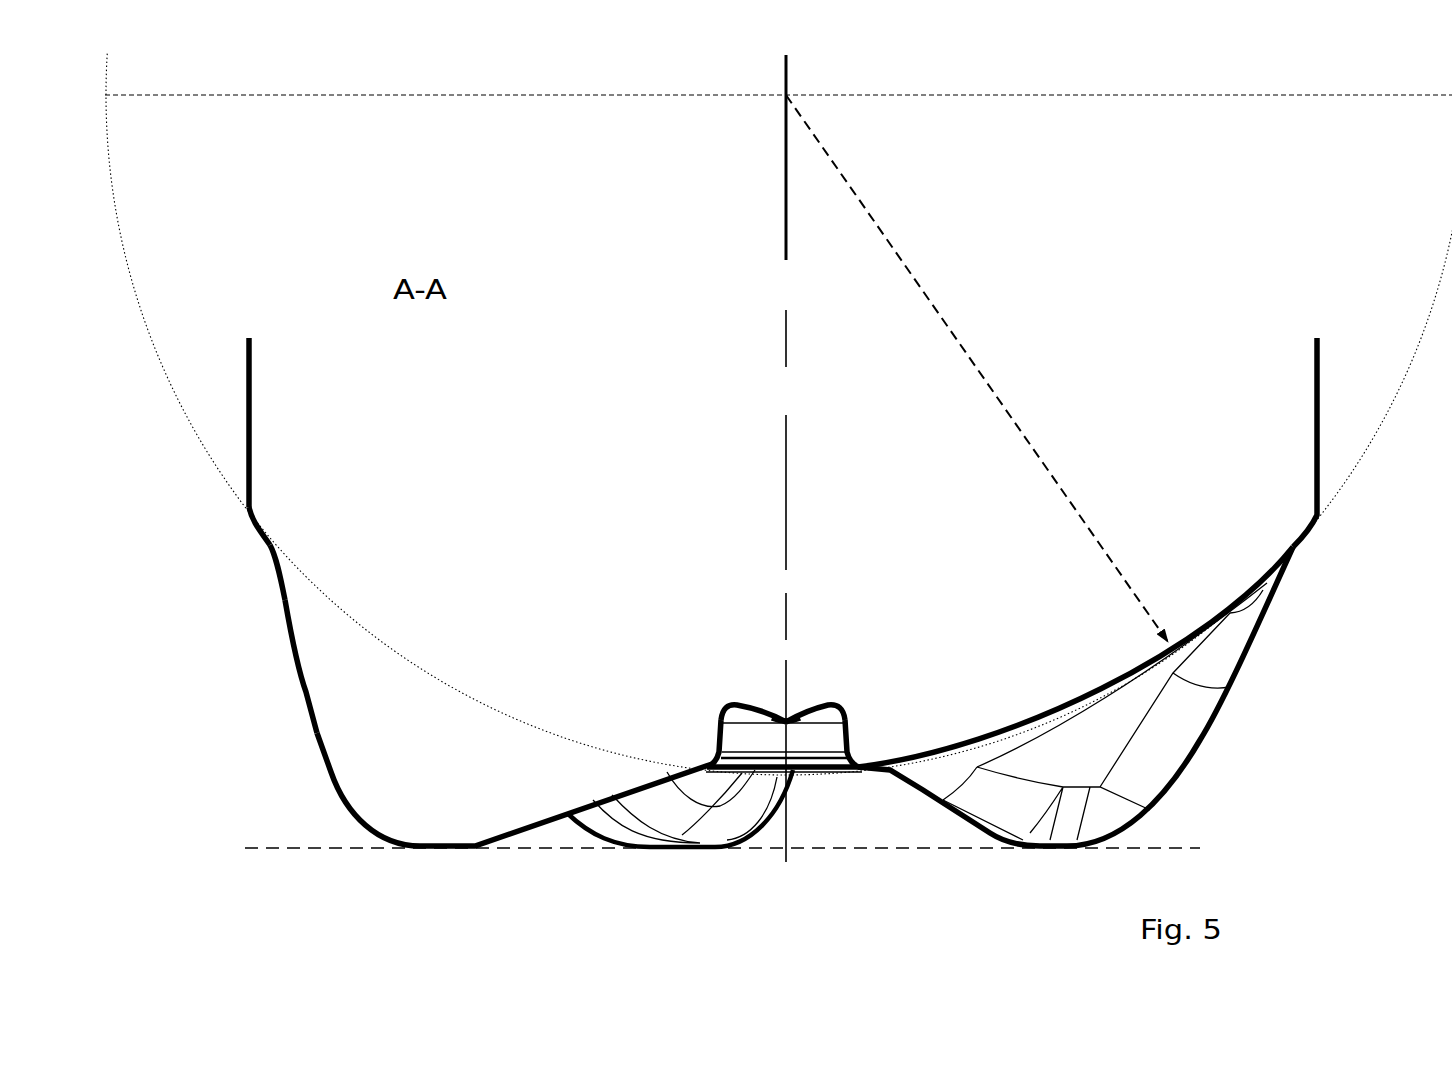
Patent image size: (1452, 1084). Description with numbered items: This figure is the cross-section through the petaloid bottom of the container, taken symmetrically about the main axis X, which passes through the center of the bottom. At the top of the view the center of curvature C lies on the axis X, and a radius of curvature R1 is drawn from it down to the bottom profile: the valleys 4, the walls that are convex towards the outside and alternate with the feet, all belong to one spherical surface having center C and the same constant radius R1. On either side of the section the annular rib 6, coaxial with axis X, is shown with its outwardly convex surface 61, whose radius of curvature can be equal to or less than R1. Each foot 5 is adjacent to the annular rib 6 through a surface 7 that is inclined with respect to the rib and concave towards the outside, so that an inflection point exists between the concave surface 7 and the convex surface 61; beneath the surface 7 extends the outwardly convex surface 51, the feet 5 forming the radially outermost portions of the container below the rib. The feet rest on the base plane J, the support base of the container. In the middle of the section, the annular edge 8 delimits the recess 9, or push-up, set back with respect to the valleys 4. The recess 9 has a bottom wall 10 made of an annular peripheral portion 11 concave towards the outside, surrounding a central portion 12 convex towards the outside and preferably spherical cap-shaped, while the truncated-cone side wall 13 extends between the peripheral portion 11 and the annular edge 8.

The valley 4 is at (1257, 582).
The foot 5 is at (310, 736).
The surface of foot 51 is at (302, 690).
The annular rib 6 is at (243, 505).
The convex surface of annular rib 61 is at (252, 522).
The surface of foot adjacent to rib 7 is at (268, 548).
The annular edge 8 is at (718, 738).
The recess 9 is at (822, 742).
The bottom wall of recess 10 is at (801, 734).
The annular peripheral portion 11 is at (733, 708).
The central portion 12 is at (790, 718).
The side wall of recess 13 is at (720, 740).
The main axis X is at (781, 467).
The center of curvature C is at (784, 97).
The radius of curvature R1 is at (978, 362).
The base plane J is at (272, 850).